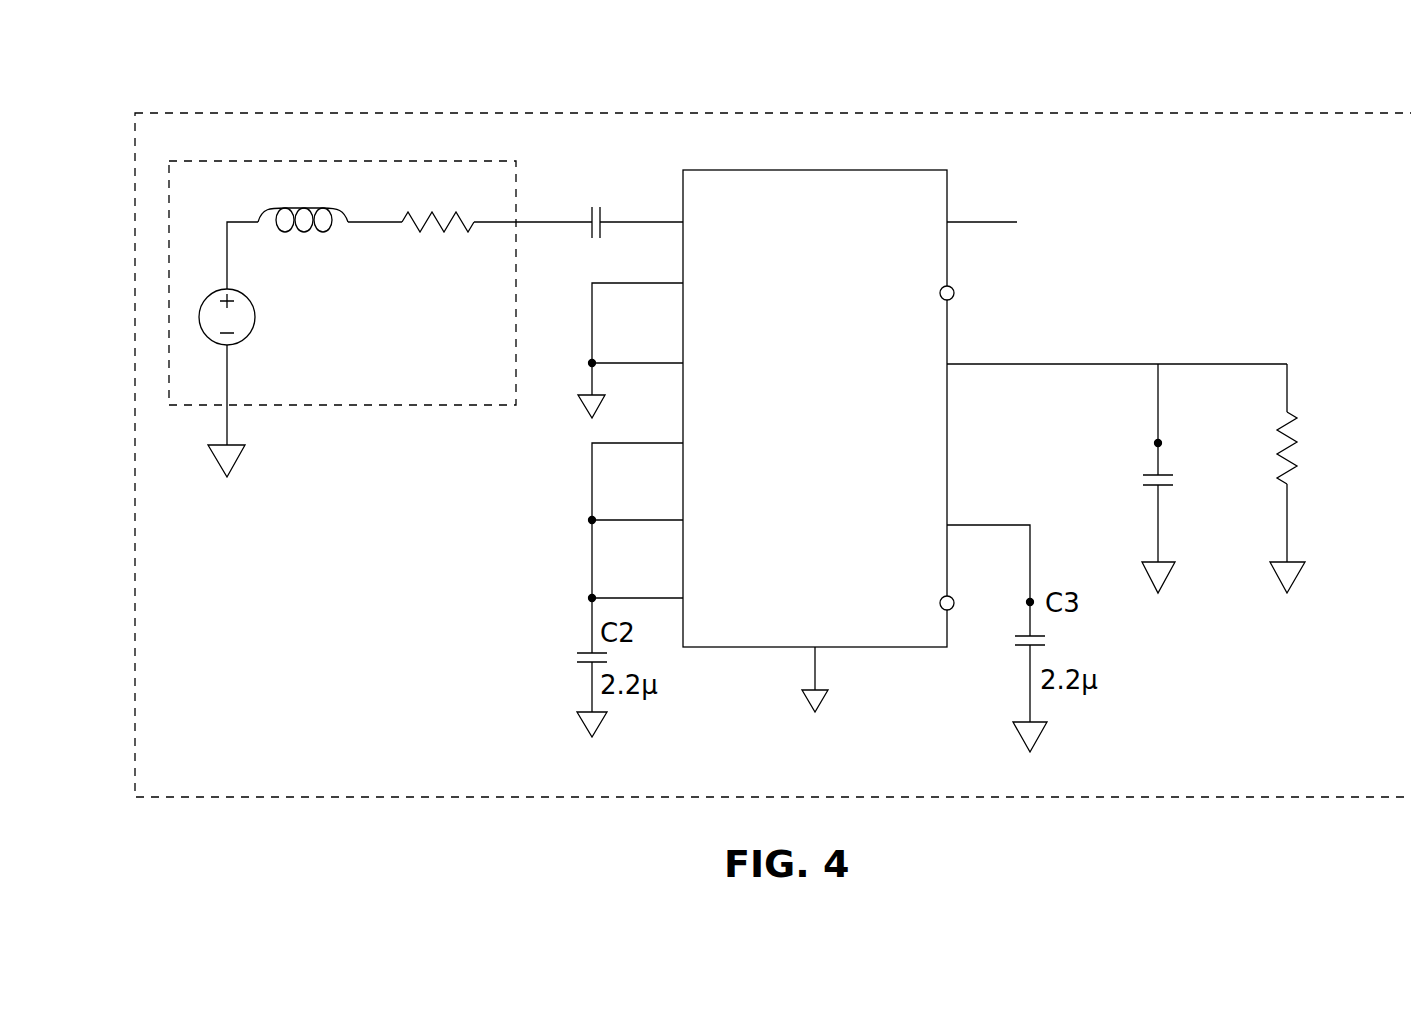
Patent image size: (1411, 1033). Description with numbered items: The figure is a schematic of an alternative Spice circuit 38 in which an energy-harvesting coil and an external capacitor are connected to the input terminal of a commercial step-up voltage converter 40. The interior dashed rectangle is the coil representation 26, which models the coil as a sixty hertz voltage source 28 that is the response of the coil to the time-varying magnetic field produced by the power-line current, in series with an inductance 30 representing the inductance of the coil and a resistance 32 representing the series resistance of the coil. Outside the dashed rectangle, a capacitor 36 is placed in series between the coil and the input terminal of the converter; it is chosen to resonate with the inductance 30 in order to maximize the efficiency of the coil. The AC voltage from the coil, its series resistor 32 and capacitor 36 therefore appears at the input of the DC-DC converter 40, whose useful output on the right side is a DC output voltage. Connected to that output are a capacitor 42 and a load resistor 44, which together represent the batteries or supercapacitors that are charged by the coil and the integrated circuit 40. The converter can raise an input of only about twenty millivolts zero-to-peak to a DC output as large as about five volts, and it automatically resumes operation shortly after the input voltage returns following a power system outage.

The spice circuit 38 is at (162, 68).
The coil representation 26 is at (442, 377).
The voltage source 28 is at (270, 318).
The inductance 30 is at (315, 240).
The resistance 32 is at (413, 252).
The capacitor 36 is at (608, 192).
The step-up voltage converter 40 is at (813, 183).
The capacitor 42 is at (1125, 455).
The resistor 44 is at (1338, 400).